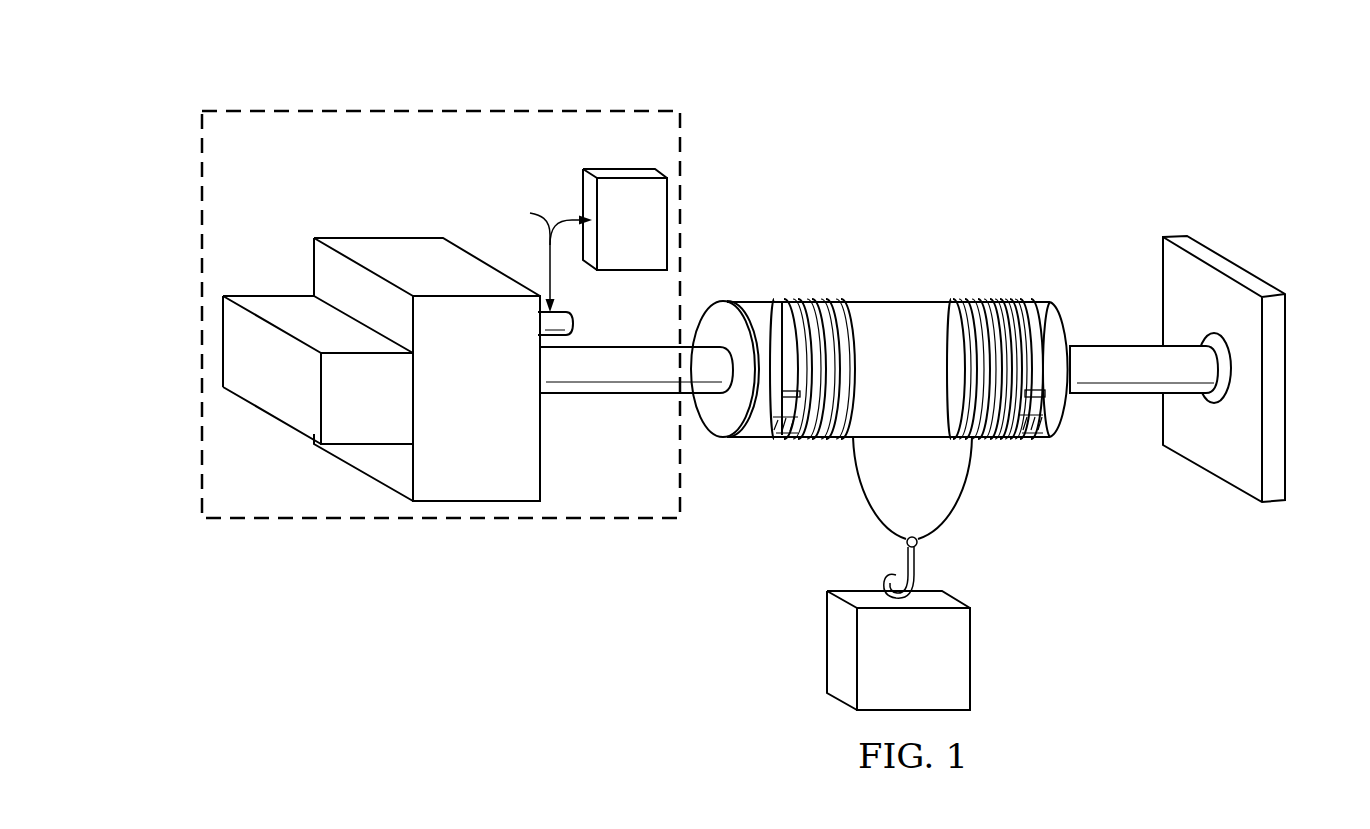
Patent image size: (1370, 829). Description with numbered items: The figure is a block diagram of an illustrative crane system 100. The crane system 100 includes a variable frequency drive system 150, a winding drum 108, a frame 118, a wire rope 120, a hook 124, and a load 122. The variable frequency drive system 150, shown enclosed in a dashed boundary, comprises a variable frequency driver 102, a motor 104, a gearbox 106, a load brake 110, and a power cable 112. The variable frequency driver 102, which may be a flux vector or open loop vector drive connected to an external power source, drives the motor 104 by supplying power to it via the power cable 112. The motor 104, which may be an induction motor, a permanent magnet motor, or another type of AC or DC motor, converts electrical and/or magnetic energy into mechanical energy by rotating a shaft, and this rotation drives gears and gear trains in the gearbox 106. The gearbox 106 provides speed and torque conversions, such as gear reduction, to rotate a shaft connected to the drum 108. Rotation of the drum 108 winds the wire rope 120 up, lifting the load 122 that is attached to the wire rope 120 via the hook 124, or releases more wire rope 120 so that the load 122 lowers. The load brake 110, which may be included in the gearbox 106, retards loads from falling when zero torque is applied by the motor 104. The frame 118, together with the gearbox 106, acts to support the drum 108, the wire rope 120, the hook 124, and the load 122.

The crane system 100 is at (1083, 98).
The variable frequency driver 102 is at (655, 255).
The motor 104 is at (575, 323).
The gearbox 106 is at (499, 444).
The winding drum 108 is at (895, 441).
The load brake 110 is at (389, 430).
The power cable 112 is at (551, 249).
The frame 118 is at (1225, 268).
The wire rope 120 is at (970, 482).
The load 122 is at (972, 658).
The hook 124 is at (916, 563).
The variable frequency drive system 150 is at (393, 104).